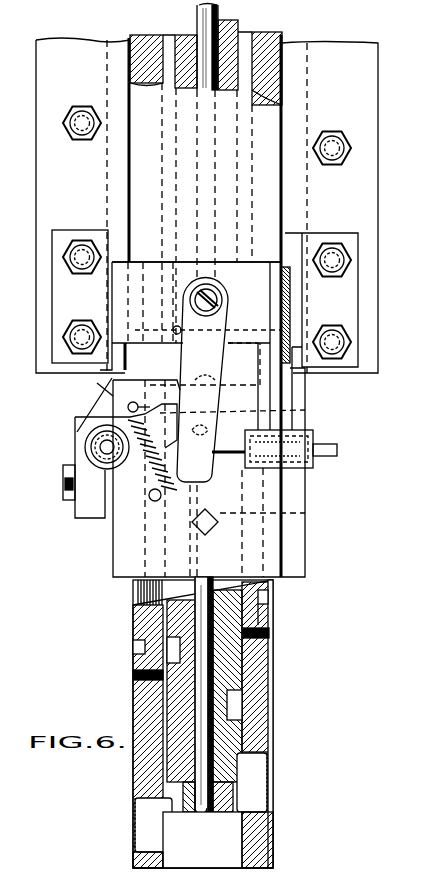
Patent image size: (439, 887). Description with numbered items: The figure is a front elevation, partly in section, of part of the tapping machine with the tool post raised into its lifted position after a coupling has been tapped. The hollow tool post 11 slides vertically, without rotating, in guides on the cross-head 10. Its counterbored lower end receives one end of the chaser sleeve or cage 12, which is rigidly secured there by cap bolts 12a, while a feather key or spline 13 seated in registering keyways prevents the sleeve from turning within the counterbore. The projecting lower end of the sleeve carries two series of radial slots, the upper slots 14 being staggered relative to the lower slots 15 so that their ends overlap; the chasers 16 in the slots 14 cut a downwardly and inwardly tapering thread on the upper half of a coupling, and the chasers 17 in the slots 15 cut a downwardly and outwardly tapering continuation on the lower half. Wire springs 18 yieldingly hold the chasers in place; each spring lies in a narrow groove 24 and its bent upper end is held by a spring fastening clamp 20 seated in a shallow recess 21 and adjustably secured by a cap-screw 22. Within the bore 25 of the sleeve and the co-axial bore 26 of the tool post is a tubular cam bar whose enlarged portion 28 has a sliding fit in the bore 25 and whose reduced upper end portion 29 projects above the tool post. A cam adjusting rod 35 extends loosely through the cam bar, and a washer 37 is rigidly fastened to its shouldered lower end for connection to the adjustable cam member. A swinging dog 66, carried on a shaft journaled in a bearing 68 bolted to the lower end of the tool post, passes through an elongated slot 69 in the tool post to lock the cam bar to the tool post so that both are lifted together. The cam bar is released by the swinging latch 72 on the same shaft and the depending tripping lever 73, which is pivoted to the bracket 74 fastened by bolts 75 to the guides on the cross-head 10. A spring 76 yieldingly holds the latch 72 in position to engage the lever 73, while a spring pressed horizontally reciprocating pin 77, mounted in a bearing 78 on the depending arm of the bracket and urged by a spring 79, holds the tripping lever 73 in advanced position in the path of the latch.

The cross-head 10 is at (42, 164).
The tool post 11 is at (121, 37).
The chaser sleeve 12 is at (273, 842).
The cap bolts 12a is at (294, 406).
The feather key 13 is at (305, 522).
The slots of the uppermost series 14 is at (270, 806).
The slots of the lowermost series 15 is at (136, 846).
The chasers 16 is at (262, 790).
The chasers 17 is at (140, 820).
The springs 18 is at (265, 680).
The spring fastening clamps 20 is at (273, 618).
The shallow recesses 21 is at (273, 598).
The cap-screws 22 is at (268, 640).
The narrow grooves 24 is at (270, 700).
The bore 25 is at (202, 840).
The co-axial bore 26 is at (238, 32).
The enlarged portion 28 is at (160, 330).
The reduced portion 29 is at (233, 30).
The cam adjusting rod 35 is at (218, 16).
The washer 37 is at (222, 814).
The swinging dog 66 is at (78, 424).
The bearing 68 is at (90, 512).
The elongated slot 69 is at (94, 388).
The swinging latch 72 is at (97, 410).
The tripping lever 73 is at (226, 363).
The bracket 74 is at (147, 262).
The bolts 75 is at (82, 318).
The spring 76 is at (140, 478).
The reciprocating pin 77 is at (232, 455).
The bearing 78 is at (313, 468).
The spring 79 is at (296, 438).